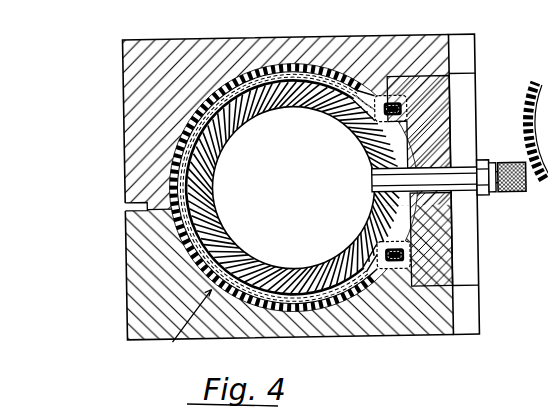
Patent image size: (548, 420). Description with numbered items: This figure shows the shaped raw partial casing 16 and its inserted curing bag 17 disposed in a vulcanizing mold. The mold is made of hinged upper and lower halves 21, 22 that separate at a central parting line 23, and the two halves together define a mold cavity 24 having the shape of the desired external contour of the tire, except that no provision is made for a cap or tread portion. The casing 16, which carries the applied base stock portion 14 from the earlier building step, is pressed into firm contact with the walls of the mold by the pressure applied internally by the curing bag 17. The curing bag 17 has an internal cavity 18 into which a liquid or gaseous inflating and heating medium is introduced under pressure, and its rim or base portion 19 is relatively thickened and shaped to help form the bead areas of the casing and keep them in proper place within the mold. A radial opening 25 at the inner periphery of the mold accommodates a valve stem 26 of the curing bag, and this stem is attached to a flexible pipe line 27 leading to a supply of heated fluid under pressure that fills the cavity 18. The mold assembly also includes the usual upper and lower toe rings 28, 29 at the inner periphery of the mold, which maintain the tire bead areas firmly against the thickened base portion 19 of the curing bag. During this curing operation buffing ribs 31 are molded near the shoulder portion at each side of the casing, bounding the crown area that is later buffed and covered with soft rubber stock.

The base stock portion 14 is at (190, 110).
The casing 16 is at (181, 333).
The curing bag 17 is at (263, 107).
The internal cavity 18 is at (333, 105).
The base portion 19 is at (370, 167).
The upper mold half 21 is at (125, 89).
The lower mold half 22 is at (125, 291).
The parting line 23 is at (160, 183).
The mold cavity 24 is at (295, 64).
The radial opening 25 is at (453, 150).
The valve stem 26 is at (459, 195).
The flexible pipe line 27 is at (517, 196).
The upper toe ring 28 is at (446, 110).
The lower toe ring 29 is at (446, 278).
The buffing ribs 31 is at (248, 66).